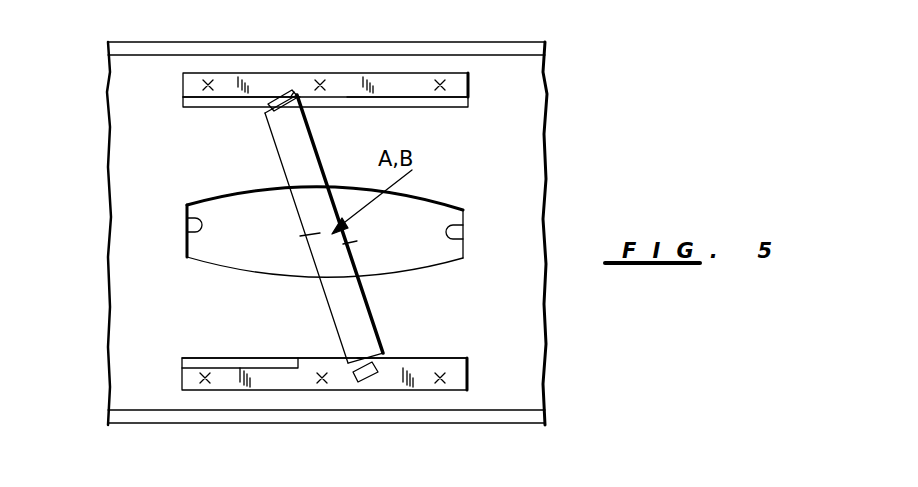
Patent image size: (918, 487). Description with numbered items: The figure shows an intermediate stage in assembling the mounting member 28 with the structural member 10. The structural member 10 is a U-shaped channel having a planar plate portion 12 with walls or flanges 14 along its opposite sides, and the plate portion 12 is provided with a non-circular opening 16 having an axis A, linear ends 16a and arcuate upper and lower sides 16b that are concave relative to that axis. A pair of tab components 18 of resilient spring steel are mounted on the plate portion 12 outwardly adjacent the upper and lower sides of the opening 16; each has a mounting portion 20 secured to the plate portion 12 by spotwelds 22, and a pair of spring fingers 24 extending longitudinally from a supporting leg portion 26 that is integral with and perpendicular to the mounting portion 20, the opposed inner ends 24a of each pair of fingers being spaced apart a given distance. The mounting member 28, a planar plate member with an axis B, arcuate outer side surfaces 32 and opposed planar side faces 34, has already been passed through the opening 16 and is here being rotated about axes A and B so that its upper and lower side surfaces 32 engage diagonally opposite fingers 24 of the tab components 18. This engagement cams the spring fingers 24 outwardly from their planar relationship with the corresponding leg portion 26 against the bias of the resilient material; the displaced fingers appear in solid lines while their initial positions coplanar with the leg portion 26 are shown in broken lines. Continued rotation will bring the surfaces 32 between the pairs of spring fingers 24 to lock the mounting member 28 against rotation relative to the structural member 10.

The structural member 10 is at (712, 74).
The plate portion 12 is at (545, 178).
The walls or flanges 14 is at (477, 42).
The non-circular opening 16 is at (410, 210).
The linear ends 16a is at (187, 221).
The arcuate upper and lower sides 16b is at (355, 189).
The tab components 18 is at (171, 82).
The mounting portion 20 is at (468, 88).
The spotwelds 22 is at (206, 392).
The spring fingers 24 is at (285, 88).
The inner ends of the spring fingers 24a is at (352, 99).
The supporting leg portion 26 is at (198, 107).
The mounting member 28 is at (385, 296).
The arcuate outer side surfaces 32 is at (280, 106).
The planar side faces 34 is at (299, 238).